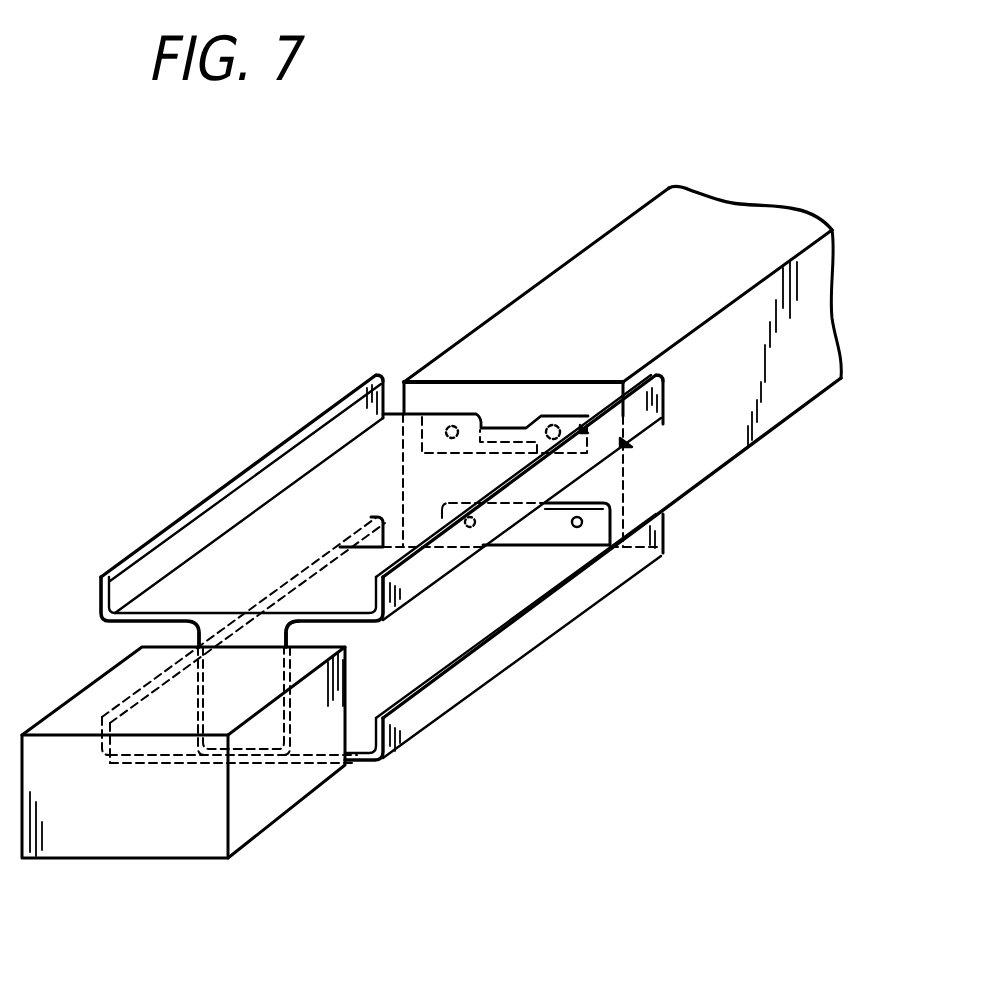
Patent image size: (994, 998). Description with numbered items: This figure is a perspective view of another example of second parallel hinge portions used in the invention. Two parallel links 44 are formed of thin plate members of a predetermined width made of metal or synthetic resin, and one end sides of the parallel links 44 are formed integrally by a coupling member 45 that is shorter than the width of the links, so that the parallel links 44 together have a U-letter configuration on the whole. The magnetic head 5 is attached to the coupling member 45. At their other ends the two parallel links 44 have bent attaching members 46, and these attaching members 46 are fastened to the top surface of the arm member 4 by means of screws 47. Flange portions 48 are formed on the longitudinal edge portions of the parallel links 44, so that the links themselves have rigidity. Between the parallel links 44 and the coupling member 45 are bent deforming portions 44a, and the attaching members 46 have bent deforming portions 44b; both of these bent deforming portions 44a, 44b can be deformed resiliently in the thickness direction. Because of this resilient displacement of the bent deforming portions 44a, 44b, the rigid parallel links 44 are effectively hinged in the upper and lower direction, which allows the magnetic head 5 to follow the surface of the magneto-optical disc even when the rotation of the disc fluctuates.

The arm member 4 is at (565, 283).
The magnetic head 5 is at (125, 843).
The parallel link 44 is at (258, 530).
The bent deforming portion 44a is at (237, 625).
The bent deforming portion 44b is at (565, 417).
The coupling member 45 is at (257, 618).
The attaching member 46 is at (623, 453).
The screw 47 is at (445, 428).
The flange portion 48 is at (278, 465).